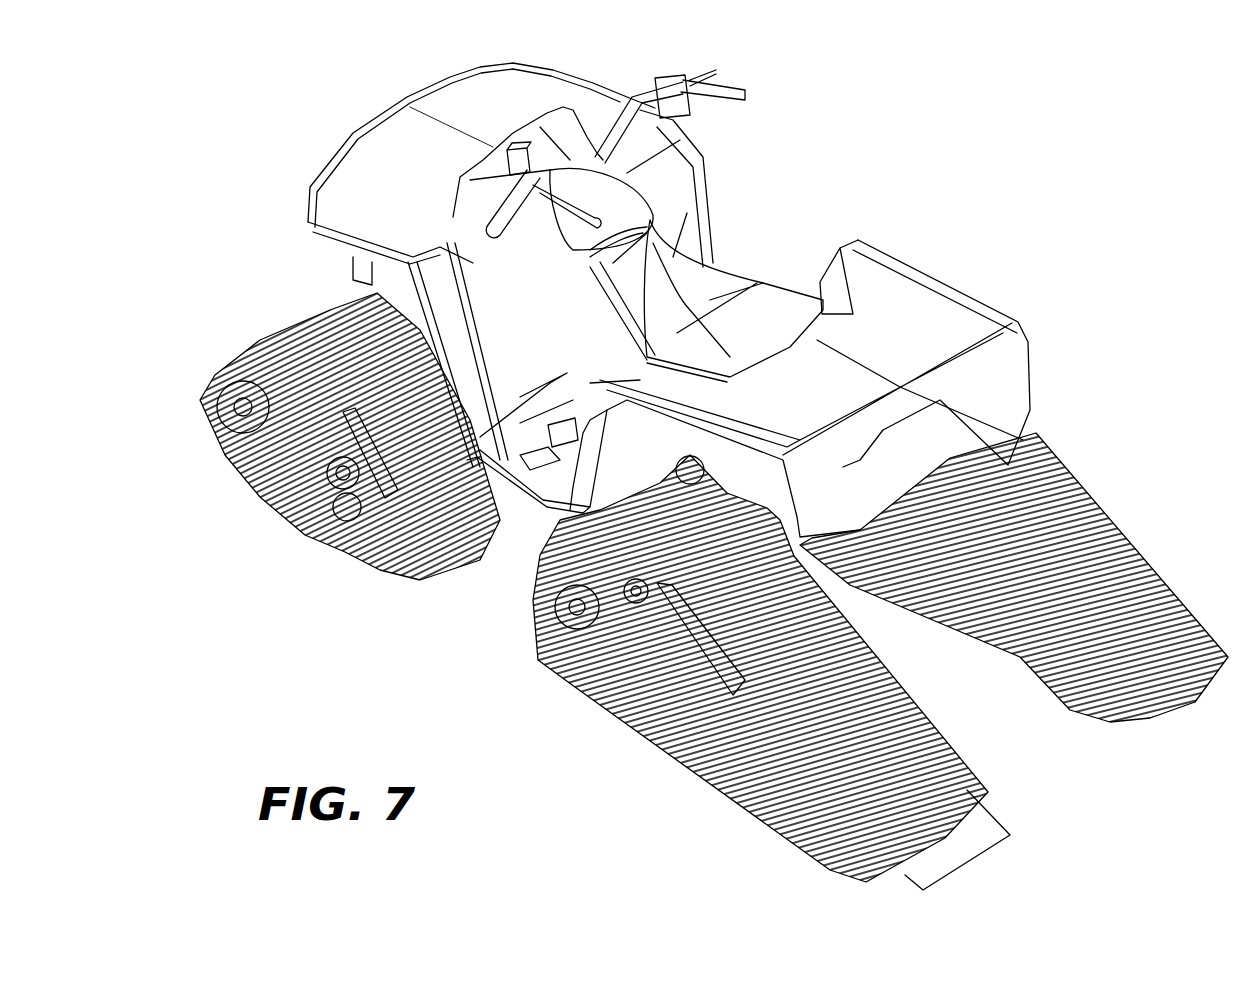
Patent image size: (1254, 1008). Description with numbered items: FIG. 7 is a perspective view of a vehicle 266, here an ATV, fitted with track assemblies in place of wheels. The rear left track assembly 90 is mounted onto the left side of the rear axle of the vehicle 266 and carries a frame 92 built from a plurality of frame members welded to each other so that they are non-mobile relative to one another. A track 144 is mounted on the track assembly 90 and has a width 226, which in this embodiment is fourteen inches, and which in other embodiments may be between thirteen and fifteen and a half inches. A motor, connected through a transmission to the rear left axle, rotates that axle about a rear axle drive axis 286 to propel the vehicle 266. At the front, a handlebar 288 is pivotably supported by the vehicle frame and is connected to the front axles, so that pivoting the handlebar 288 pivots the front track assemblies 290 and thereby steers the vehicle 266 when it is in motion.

The vehicle 266 is at (298, 98).
The handlebar 288 is at (618, 118).
The front track assembly 290 is at (218, 452).
The track assembly 90 is at (573, 687).
The frame 92 is at (705, 657).
The track 144 is at (713, 768).
The width 226 is at (978, 860).
The rear axle drive axis 286 is at (617, 637).